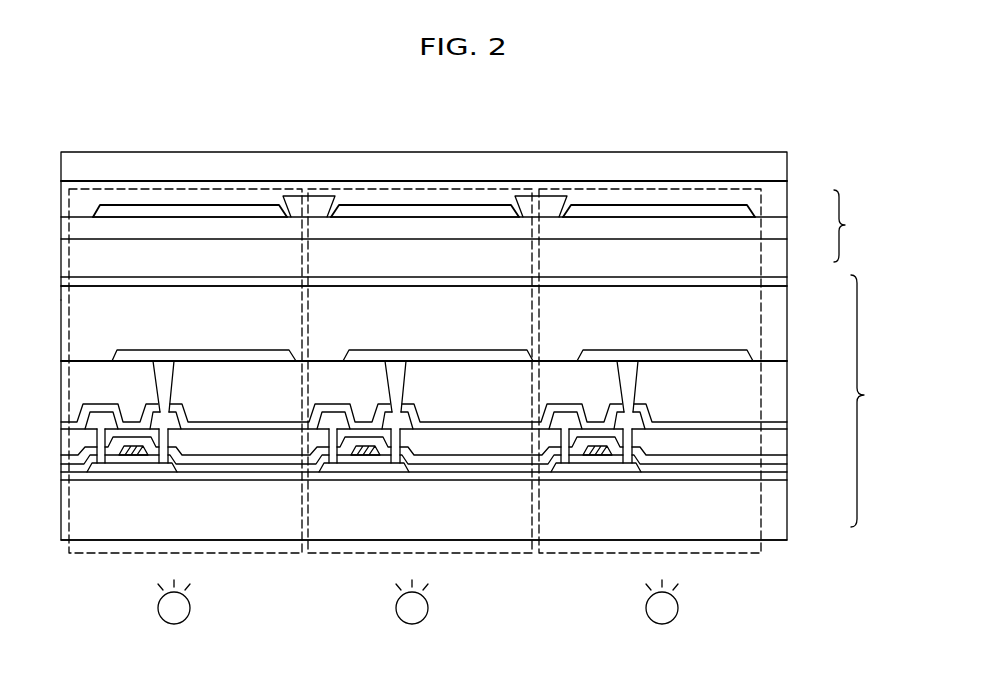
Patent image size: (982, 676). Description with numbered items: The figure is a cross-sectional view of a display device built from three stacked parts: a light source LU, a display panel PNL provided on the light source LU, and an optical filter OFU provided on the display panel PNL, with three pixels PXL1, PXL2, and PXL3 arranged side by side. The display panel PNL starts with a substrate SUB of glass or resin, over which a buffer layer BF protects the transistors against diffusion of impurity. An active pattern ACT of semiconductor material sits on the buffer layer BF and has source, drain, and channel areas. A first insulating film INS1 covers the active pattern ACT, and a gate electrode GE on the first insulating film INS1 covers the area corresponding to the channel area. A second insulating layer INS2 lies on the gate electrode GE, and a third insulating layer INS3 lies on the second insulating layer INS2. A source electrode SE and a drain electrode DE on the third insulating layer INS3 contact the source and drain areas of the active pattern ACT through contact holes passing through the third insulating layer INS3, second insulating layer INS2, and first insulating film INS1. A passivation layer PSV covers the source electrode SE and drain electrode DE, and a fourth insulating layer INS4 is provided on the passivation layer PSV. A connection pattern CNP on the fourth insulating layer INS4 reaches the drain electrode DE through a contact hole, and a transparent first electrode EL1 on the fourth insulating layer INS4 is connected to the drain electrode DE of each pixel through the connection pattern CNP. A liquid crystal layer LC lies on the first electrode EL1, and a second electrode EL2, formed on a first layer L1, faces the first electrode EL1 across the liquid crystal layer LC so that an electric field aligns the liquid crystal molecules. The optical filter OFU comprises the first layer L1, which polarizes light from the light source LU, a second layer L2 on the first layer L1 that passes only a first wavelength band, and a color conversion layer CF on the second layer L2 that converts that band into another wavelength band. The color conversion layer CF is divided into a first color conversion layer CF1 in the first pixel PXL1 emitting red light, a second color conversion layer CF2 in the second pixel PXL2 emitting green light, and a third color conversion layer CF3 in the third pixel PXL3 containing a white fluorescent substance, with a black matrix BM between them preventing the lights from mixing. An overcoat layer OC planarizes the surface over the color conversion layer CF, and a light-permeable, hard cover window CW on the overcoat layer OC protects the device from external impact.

The cover window CW is at (661, 165).
The overcoat layer OC is at (611, 195).
The first color conversion layer CF1 is at (190, 212).
The second color conversion layer CF2 is at (442, 212).
The third color conversion layer CF3 is at (722, 213).
The black matrix BM is at (552, 203).
The color conversion layer CF is at (748, 210).
The second layer L2 is at (778, 229).
The first layer L1 is at (778, 253).
The optical filter OFU is at (855, 226).
The second electrode EL2 is at (778, 283).
The liquid crystal layer LC is at (778, 320).
The first electrode EL1 is at (750, 356).
The fourth insulating layer INS4 is at (776, 375).
The passivation layer PSV is at (780, 422).
The third insulating layer INS3 is at (780, 437).
The second insulating layer INS2 is at (780, 458).
The first insulating film INS1 is at (780, 468).
The buffer layer BF is at (780, 477).
The substrate SUB is at (780, 518).
The display panel PNL is at (872, 401).
The active pattern ACT is at (102, 468).
The gate electrode GE is at (127, 452).
The source electrode SE is at (96, 416).
The drain electrode DE is at (158, 416).
The connection pattern CNP is at (626, 376).
The first pixel PXL1 is at (273, 555).
The second pixel PXL2 is at (501, 555).
The third pixel PXL3 is at (574, 555).
The light source LU is at (678, 610).